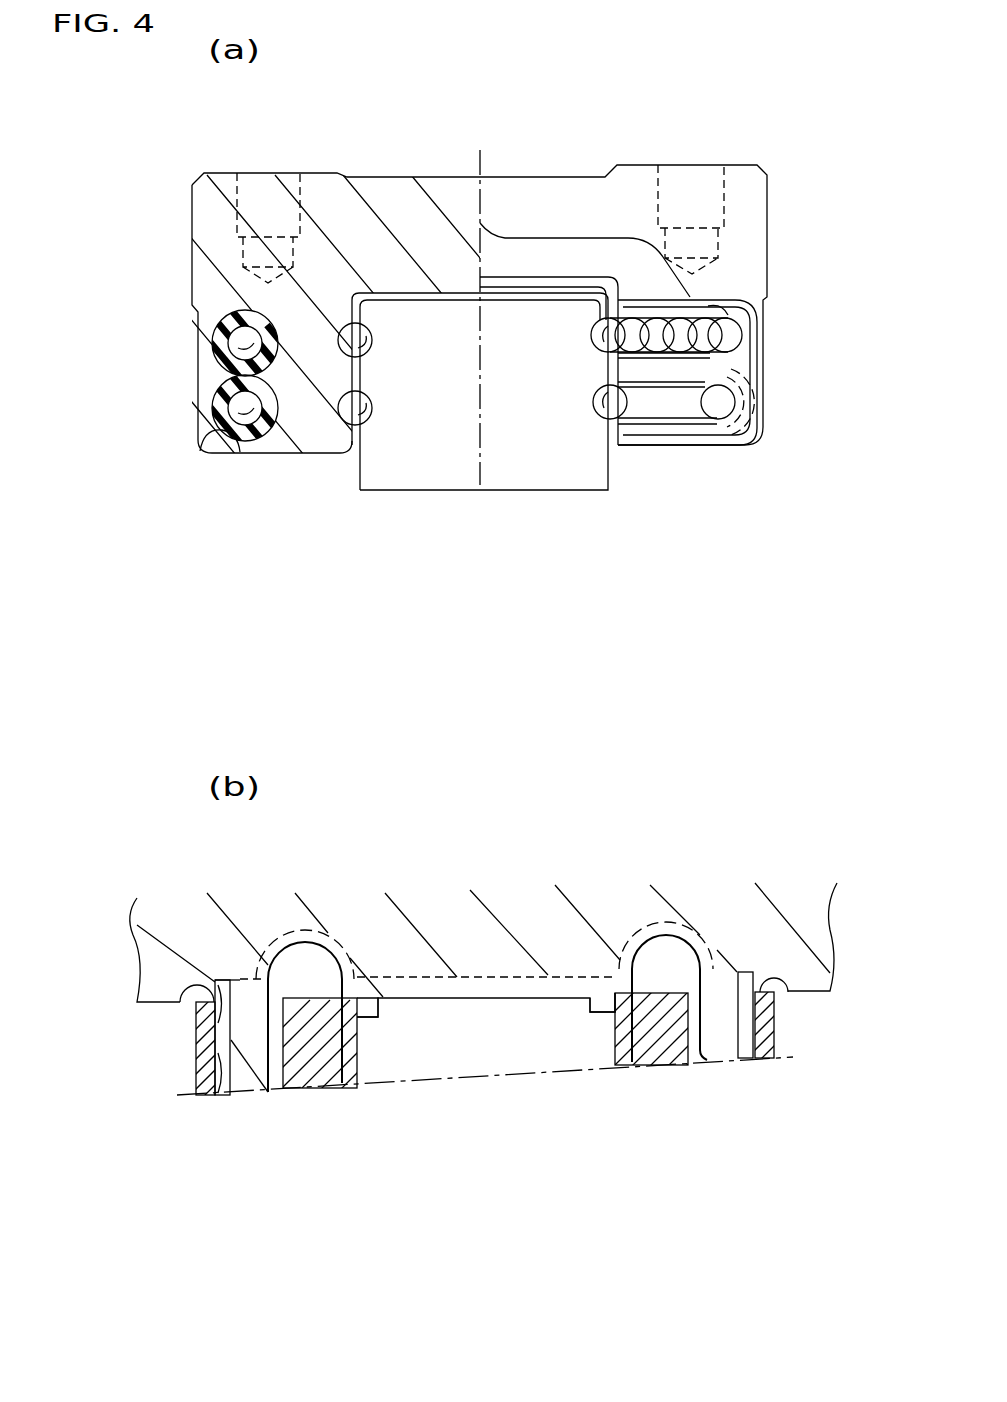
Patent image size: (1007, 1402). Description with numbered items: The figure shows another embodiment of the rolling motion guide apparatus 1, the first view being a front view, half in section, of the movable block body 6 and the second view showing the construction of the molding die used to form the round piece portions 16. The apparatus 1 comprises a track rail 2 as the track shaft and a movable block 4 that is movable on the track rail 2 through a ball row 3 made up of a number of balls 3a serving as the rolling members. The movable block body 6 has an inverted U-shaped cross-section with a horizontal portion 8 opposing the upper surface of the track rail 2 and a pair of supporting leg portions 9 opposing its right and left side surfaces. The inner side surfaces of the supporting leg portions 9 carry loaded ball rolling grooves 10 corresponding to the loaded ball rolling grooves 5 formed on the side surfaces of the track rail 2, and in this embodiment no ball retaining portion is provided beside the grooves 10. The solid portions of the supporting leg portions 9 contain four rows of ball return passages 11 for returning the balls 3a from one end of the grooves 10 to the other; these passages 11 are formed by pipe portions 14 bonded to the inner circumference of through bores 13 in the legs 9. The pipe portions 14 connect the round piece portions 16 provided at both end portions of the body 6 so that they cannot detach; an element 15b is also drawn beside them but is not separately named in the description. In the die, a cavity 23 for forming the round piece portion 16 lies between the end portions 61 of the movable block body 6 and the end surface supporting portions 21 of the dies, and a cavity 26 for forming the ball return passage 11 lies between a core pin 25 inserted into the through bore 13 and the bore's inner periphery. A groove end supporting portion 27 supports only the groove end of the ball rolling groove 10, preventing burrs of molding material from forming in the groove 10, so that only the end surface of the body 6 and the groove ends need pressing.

The rolling motion guide apparatus 1 is at (740, 135).
The track rail 2 is at (538, 473).
The ball row 3 is at (636, 293).
The balls 3a is at (700, 325).
The movable block 4 is at (490, 158).
The loaded ball rolling grooves 5 is at (363, 353).
The movable block body 6 is at (422, 210).
The horizontal portion 8 is at (383, 193).
The supporting leg portions 9 is at (215, 297).
The loaded ball rolling grooves 10 is at (345, 333).
The ball return passages 11 is at (230, 348).
The through bores 13 is at (230, 340).
The pipe portions 14 is at (240, 313).
The end cap 15b is at (690, 300).
The round piece portions 16 is at (740, 297).
The end portions 61 is at (598, 185).
The end surface supporting portions 21 is at (198, 1003).
The cavity 23 is at (298, 972).
The core pin 25 is at (253, 1080).
The cavity 26 is at (213, 980).
The groove end supporting portion 27 is at (370, 1017).